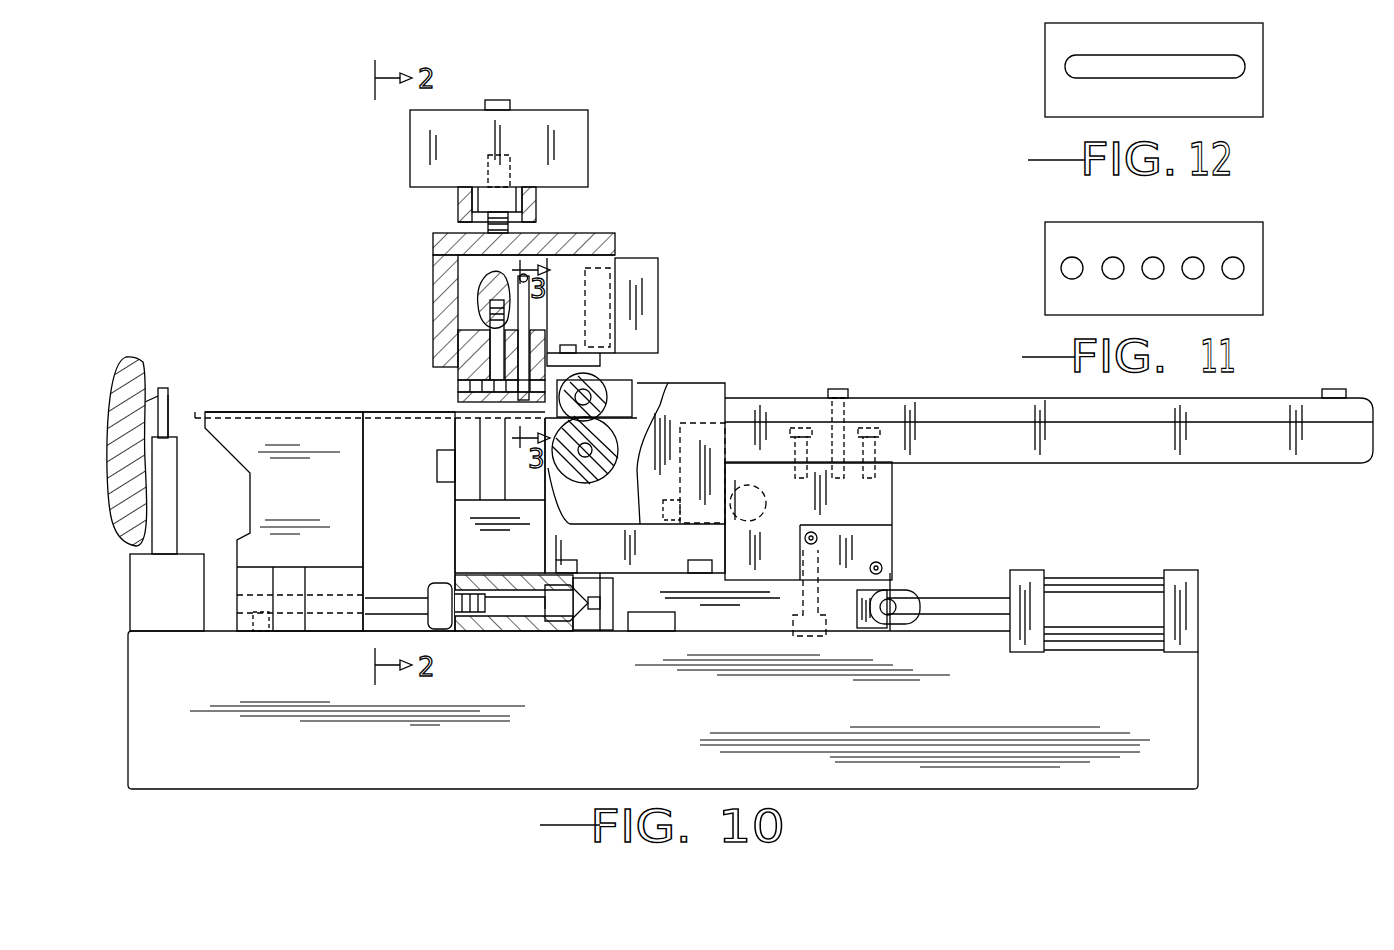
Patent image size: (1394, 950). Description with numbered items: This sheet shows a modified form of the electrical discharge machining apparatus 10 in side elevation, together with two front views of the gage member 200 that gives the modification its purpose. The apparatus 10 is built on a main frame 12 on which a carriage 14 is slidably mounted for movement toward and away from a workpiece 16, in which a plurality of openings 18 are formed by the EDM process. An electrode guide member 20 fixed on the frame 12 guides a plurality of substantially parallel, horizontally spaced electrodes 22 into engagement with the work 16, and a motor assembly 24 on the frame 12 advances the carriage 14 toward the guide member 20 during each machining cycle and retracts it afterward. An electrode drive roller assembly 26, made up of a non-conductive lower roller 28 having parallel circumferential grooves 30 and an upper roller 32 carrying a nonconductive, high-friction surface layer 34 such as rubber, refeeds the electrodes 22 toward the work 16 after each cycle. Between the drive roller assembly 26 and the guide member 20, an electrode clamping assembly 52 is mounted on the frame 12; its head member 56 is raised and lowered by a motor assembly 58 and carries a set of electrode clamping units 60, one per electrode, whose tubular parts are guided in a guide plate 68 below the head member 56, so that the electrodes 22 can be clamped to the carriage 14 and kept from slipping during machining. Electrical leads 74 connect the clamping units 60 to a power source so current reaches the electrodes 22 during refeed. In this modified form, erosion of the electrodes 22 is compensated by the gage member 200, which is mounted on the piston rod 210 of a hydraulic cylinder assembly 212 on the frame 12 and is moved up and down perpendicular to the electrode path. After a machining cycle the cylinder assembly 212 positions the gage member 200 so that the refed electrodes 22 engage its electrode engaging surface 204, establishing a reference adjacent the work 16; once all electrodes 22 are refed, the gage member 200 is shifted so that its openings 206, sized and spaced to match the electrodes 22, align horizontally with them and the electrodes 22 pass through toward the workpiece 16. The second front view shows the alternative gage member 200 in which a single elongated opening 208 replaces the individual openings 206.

In FIG. 10, the electrical discharge machining apparatus 10 is at (1180, 530).
In FIG. 10, the main frame 12 is at (612, 703).
In FIG. 10, the carriage 14 is at (892, 505).
In FIG. 10, the workpiece 16 is at (128, 360).
In FIG. 10, the openings 18 is at (143, 381).
In FIG. 10, the electrode guide member 20 is at (313, 497).
In FIG. 10, the electrodes 22 is at (386, 425).
In FIG. 10, the motor assembly 24 is at (1116, 620).
In FIG. 10, the electrode drive roller assembly 26 is at (627, 435).
In FIG. 10, the lower roller 28 is at (568, 524).
In FIG. 10, the circumferential grooves 30 is at (583, 482).
In FIG. 10, the upper roller 32 is at (600, 380).
In FIG. 10, the surface layer 34 is at (640, 385).
In FIG. 10, the electrode clamping assembly 52 is at (428, 278).
In FIG. 10, the head member 56 is at (470, 345).
In FIG. 10, the motor assembly 58 is at (538, 142).
In FIG. 10, the electrode clamping units 60 is at (532, 360).
In FIG. 10, the guide plate 68 is at (450, 402).
In FIG. 10, the electrical leads 74 is at (565, 298).
In FIG. 10, the gage member 200 is at (170, 400).
In FIG. 12, the gage member 200 is at (1263, 97).
In FIG. 11, the gage member 200 is at (1263, 266).
In FIG. 10, the electrode engaging surface 204 is at (170, 404).
In FIG. 12, the electrode engaging surface 204 is at (1240, 45).
In FIG. 11, the electrode engaging surface 204 is at (1245, 238).
In FIG. 11, the openings 206 is at (1115, 258).
In FIG. 12, the elongated opening 208 is at (1245, 68).
In FIG. 10, the piston rod 210 is at (178, 472).
In FIG. 10, the hydraulic cylinder assembly 212 is at (130, 592).